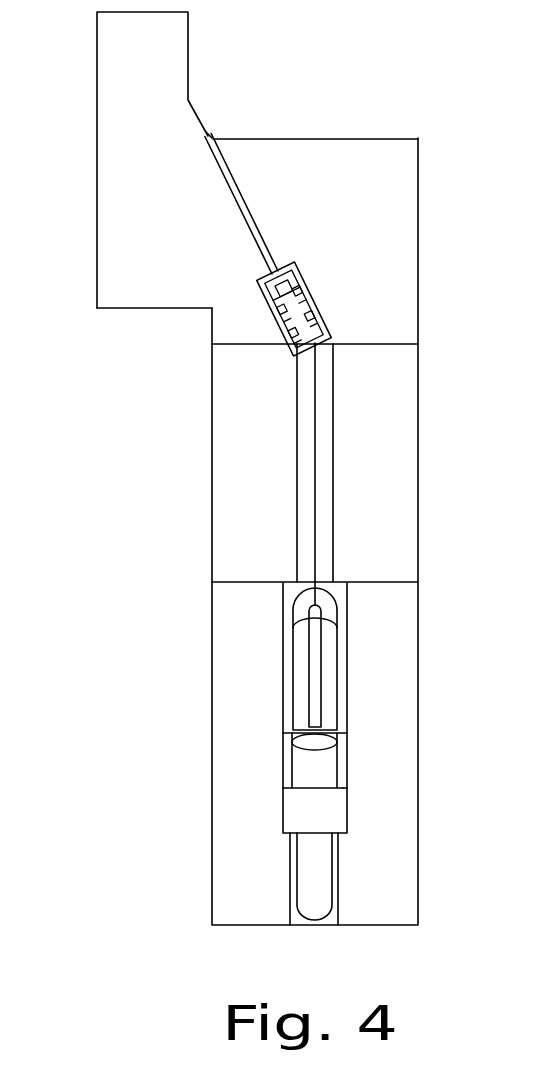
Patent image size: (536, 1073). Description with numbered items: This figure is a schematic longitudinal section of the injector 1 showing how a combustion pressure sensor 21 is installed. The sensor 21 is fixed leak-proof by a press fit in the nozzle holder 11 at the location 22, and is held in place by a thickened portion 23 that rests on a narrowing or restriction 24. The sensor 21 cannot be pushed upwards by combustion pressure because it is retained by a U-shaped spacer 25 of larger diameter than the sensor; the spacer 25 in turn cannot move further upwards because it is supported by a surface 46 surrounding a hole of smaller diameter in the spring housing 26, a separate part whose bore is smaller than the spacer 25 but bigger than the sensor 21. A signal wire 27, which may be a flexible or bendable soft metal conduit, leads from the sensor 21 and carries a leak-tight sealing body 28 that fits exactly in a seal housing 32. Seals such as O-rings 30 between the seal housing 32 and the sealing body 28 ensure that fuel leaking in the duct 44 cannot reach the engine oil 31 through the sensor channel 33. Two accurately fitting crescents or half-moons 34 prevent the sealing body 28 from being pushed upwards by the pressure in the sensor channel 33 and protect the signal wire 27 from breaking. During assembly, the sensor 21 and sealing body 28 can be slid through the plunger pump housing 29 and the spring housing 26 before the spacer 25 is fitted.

The injector 1 is at (158, 652).
The nozzle holder 11 is at (228, 812).
The combustion pressure sensor 21 is at (320, 767).
The press fit location 22 is at (348, 812).
The thickened portion 23 is at (348, 620).
The narrowing 24 is at (283, 848).
The U-shaped spacer 25 is at (330, 687).
The spring housing 26 is at (390, 466).
The signal wire 27 is at (318, 433).
The sealing body 28 is at (310, 330).
The plunger pump housing 29 is at (383, 158).
The O-rings 30 is at (265, 316).
The engine oil 31 is at (214, 125).
The seal housing 32 is at (302, 266).
The sensor channel 33 is at (250, 207).
The crescents 34 is at (292, 258).
The duct 44 is at (302, 523).
The surface 46 is at (376, 580).